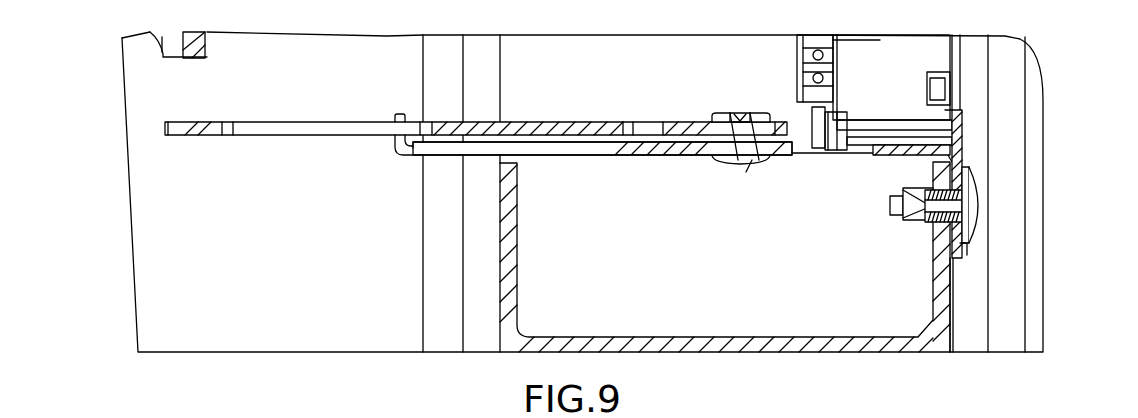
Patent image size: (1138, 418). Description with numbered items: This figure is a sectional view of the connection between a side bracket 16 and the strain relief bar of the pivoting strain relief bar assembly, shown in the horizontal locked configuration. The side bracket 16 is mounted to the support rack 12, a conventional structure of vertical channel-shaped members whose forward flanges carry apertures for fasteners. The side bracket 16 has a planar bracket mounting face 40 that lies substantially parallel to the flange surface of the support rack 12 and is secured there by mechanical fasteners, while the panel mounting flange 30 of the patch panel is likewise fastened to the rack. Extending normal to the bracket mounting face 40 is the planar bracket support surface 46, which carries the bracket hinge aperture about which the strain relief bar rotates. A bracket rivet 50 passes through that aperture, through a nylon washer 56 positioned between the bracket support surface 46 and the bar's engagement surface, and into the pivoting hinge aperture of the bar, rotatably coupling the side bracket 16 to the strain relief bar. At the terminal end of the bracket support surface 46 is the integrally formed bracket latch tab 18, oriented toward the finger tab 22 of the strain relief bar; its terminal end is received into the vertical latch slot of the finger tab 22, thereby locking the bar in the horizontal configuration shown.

The support rack 12 is at (828, 353).
The side bracket 16 is at (401, 171).
The bracket latch tab 18 is at (397, 118).
The finger tab 22 is at (195, 135).
The panel mounting flange 30 is at (965, 160).
The bracket mounting face 40 is at (964, 257).
The bracket support surface 46 is at (538, 158).
The bracket rivet 50 is at (744, 166).
The nylon washer 56 is at (788, 127).